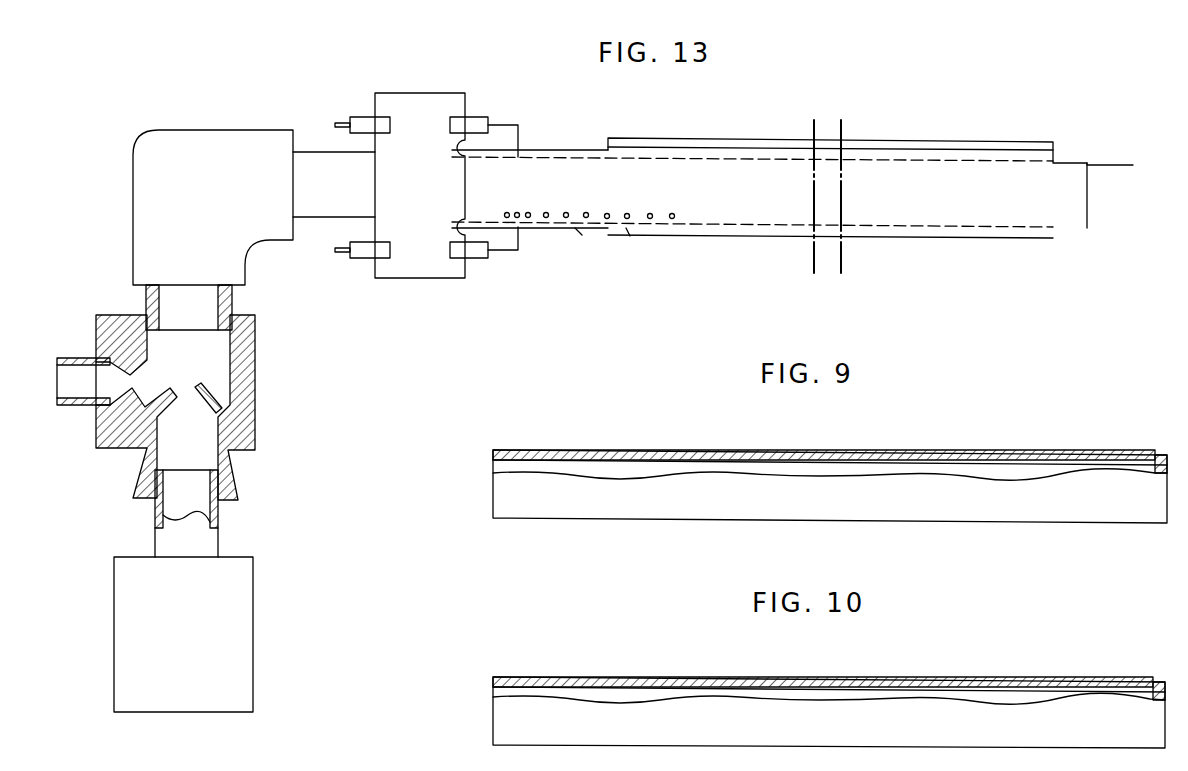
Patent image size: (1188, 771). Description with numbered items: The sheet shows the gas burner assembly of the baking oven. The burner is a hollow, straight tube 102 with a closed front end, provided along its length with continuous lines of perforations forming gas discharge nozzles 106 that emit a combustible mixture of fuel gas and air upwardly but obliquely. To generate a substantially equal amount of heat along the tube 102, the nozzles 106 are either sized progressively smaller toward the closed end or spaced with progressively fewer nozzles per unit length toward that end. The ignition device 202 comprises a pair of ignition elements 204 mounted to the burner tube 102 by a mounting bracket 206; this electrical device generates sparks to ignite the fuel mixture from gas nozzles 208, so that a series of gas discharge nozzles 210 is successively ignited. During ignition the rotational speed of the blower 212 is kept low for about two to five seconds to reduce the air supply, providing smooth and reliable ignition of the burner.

In FIG. 13, the tube 102 is at (1068, 162).
In FIG. 9, the tube 102 is at (1040, 458).
In FIG. 10, the tube 102 is at (1033, 682).
In FIG. 9, the gas discharge nozzles 106 is at (635, 452).
In FIG. 10, the gas discharge nozzles 106 is at (618, 677).
In FIG. 13, the ignition device 202 is at (456, 68).
In FIG. 13, the ignition elements 204 is at (497, 122).
In FIG. 13, the mounting bracket 206 is at (402, 270).
In FIG. 13, the gas nozzles 208 is at (530, 210).
In FIG. 13, the gas discharge nozzles 210 is at (628, 238).
In FIG. 13, the blower 212 is at (242, 605).